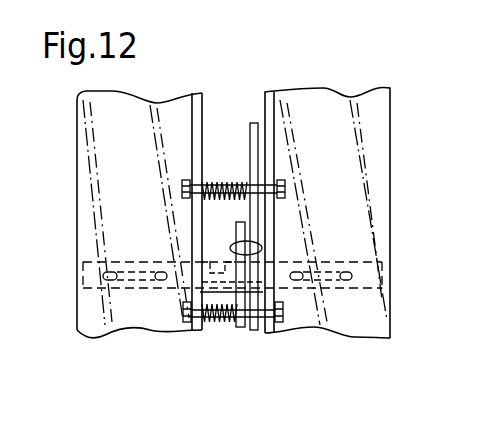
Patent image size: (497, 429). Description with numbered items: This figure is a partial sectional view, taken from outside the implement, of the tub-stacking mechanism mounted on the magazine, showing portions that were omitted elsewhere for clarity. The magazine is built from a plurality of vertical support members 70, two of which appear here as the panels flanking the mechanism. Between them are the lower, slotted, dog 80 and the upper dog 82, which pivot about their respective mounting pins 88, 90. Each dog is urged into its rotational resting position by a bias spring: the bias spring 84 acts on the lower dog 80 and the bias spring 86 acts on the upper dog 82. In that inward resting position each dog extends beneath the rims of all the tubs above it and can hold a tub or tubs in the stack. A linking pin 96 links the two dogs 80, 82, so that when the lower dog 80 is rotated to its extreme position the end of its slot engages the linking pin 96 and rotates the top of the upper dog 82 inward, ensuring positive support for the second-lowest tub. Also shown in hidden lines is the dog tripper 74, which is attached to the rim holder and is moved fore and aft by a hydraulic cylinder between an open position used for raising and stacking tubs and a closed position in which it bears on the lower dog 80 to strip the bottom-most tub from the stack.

The vertical support member 70 is at (128, 106).
The dog tripper 74 is at (368, 268).
The lower slotted dog 80 is at (242, 327).
The upper dog 82 is at (255, 123).
The bias spring 84 is at (198, 326).
The bias spring 86 is at (210, 180).
The mounting pin 88 is at (292, 330).
The mounting pin 90 is at (282, 182).
The linking pin 96 is at (250, 250).